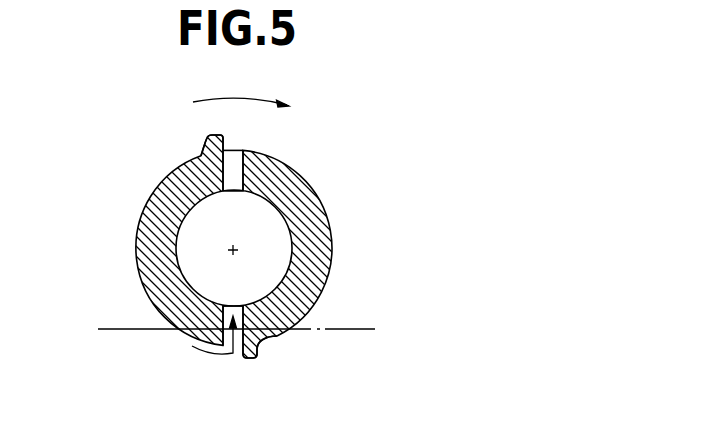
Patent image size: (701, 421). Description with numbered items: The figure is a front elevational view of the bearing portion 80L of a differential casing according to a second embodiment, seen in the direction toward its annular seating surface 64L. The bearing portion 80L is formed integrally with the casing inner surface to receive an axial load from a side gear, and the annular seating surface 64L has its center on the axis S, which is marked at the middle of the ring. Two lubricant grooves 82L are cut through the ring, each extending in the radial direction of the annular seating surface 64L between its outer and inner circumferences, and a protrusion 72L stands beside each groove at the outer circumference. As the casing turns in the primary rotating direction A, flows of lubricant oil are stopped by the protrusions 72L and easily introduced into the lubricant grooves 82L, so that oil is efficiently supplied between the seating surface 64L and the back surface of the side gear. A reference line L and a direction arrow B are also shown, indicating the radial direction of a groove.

The bearing portion 80L is at (246, 247).
The annular seating surface 64L is at (153, 229).
The protrusion 72L is at (214, 136).
The lubricant groove 82L is at (243, 172).
The axis S is at (226, 239).
The reference line L is at (118, 329).
The primary rotating direction A is at (241, 89).
The movement direction B is at (214, 348).